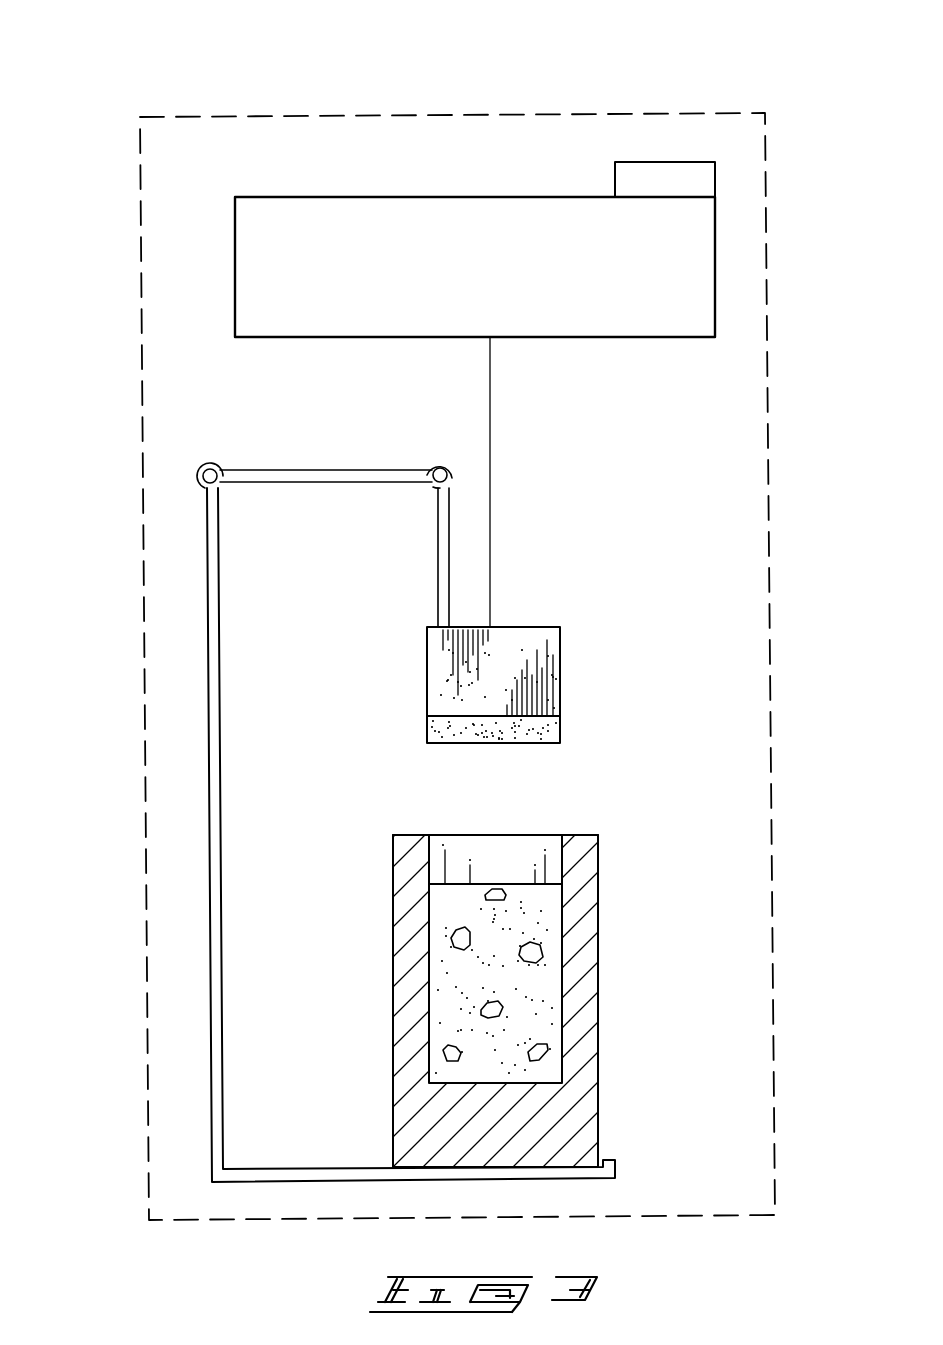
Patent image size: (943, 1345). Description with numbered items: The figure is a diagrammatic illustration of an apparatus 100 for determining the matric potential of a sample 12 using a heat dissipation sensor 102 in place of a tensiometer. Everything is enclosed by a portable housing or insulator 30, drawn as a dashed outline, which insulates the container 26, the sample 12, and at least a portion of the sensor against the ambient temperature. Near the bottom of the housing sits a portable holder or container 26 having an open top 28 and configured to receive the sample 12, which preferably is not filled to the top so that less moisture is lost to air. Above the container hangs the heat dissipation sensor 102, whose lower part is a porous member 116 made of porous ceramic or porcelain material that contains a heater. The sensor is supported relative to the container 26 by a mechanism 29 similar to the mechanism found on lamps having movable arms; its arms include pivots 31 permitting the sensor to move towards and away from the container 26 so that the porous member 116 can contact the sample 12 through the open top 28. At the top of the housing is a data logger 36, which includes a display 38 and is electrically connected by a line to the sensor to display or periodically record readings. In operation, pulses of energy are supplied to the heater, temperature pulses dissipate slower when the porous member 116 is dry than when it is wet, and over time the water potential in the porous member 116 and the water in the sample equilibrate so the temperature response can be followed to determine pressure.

The apparatus 100 is at (190, 50).
The housing or insulator 30 is at (775, 1117).
The data logger 36 is at (235, 276).
The display 38 is at (615, 178).
The mechanism 29 is at (299, 486).
The pivots 31 is at (204, 465).
The heat dissipation sensor 102 is at (563, 670).
The porous member 116 is at (488, 745).
The container 26 is at (598, 1117).
The open top 28 is at (580, 835).
The sample 12 is at (463, 985).